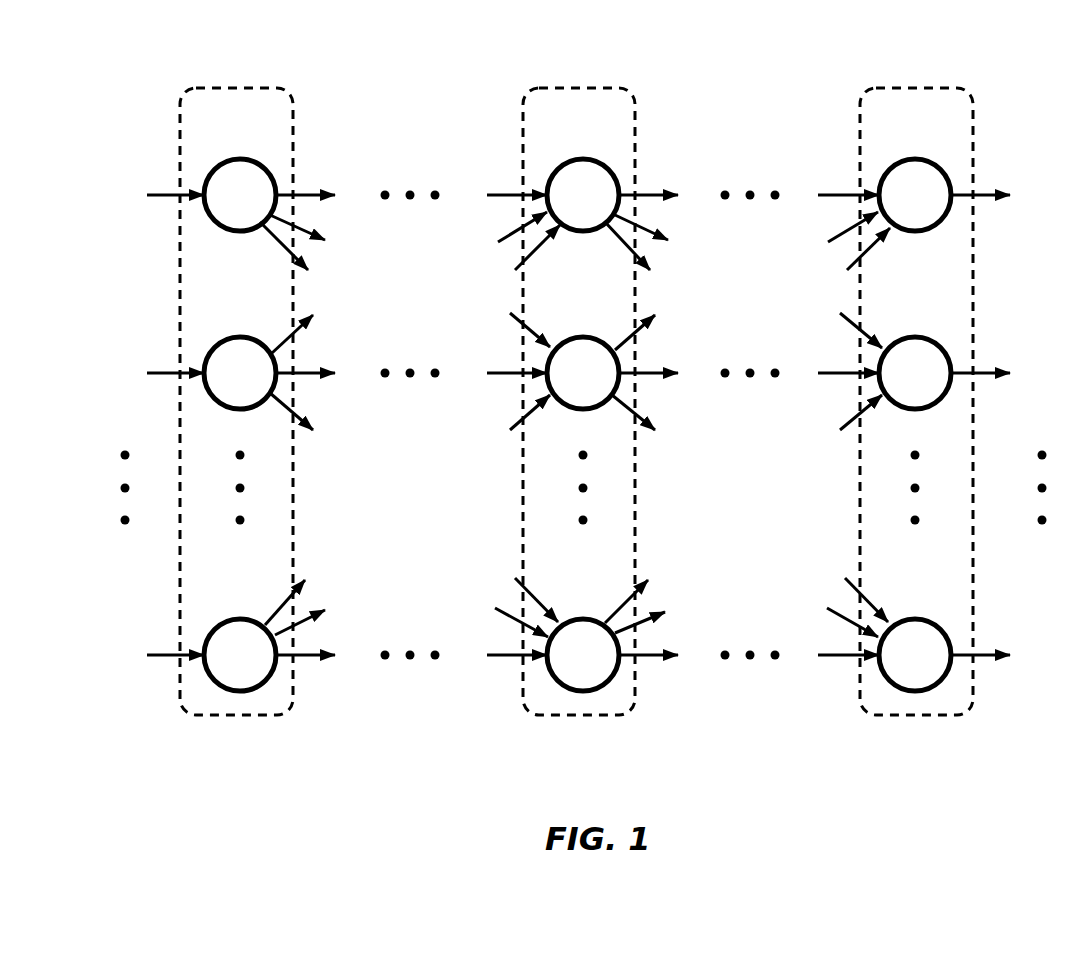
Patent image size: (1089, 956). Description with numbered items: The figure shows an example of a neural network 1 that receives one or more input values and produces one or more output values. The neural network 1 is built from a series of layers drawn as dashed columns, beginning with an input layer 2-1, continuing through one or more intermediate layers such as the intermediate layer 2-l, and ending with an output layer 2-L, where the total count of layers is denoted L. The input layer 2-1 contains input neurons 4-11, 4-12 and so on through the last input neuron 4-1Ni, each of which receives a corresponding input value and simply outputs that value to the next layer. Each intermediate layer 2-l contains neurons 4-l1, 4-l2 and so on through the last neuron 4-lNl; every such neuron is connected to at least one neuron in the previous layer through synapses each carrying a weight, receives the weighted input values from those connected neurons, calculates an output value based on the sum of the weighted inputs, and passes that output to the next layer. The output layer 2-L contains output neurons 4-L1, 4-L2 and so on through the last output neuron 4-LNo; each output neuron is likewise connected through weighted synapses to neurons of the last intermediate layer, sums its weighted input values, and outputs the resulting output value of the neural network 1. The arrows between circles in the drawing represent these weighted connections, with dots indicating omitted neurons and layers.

The neural network 1 is at (596, 784).
The input layer 2-1 is at (290, 96).
The intermediate layer 2-l is at (632, 96).
The output layer 2-L is at (970, 96).
The input neuron 4-11 is at (241, 160).
The input neuron 4-12 is at (241, 338).
The input neuron 4-1Ni is at (241, 620).
The neuron 4-l1 is at (584, 160).
The neuron 4-l2 is at (584, 338).
The neuron 4-lNl is at (584, 620).
The output neuron 4-L1 is at (916, 160).
The output neuron 4-L2 is at (916, 338).
The output neuron 4-LNo is at (927, 592).